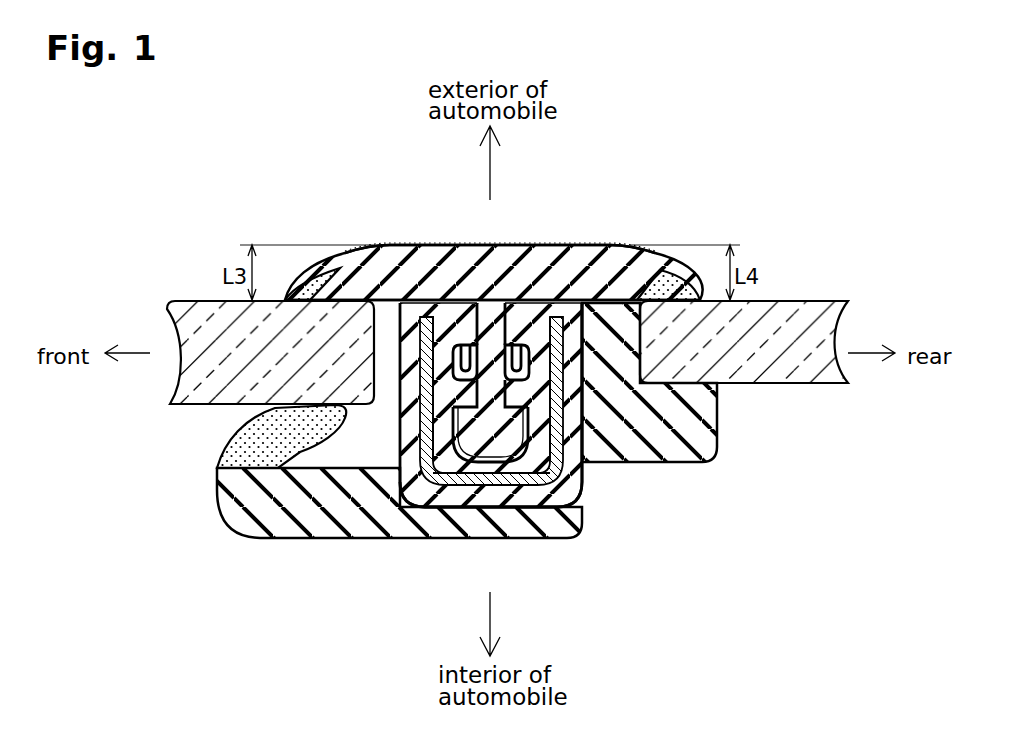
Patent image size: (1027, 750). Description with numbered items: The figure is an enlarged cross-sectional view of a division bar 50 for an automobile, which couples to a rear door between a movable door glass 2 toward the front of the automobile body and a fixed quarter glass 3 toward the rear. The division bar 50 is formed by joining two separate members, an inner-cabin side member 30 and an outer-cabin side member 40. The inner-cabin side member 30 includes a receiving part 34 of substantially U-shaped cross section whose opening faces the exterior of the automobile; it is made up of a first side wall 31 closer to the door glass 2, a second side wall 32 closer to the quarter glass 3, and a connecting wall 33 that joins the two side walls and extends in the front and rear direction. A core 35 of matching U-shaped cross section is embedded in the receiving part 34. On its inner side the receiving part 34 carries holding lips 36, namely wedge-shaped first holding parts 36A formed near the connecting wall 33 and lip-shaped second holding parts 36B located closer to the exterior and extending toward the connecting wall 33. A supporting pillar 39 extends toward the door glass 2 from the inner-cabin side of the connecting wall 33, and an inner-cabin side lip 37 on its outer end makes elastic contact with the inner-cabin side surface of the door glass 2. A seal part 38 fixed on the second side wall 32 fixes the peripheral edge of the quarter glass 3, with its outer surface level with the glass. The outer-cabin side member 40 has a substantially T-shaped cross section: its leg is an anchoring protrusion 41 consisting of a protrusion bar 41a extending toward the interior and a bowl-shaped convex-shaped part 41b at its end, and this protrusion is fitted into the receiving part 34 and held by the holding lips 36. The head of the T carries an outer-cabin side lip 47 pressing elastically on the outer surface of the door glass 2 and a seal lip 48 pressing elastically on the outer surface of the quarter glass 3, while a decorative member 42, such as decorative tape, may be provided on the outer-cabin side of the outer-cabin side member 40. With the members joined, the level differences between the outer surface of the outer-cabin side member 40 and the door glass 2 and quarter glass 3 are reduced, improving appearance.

The door glass 2 is at (210, 300).
The quarter glass 3 is at (800, 301).
The inner-cabin side member 30 is at (463, 386).
The first side wall 31 is at (408, 410).
The second side wall 32 is at (575, 428).
The connecting wall 33 is at (500, 486).
The receiving part 34 is at (454, 471).
The core 35 is at (465, 488).
The holding lips 36 is at (459, 382).
The first holding parts 36A is at (555, 470).
The second holding parts 36B is at (430, 312).
The inner-cabin side lip 37 is at (235, 433).
The seal part 38 is at (700, 440).
The supporting pillar 39 is at (305, 515).
The outer-cabin side member 40 is at (505, 382).
The anchoring protrusion 41 is at (458, 382).
The protrusion bar 41a is at (462, 342).
The convex-shaped part 41b is at (522, 450).
The decorative member 42 is at (518, 245).
The outer-cabin side lip 47 is at (312, 272).
The seal lip 48 is at (690, 268).
The division bar 50 is at (709, 193).